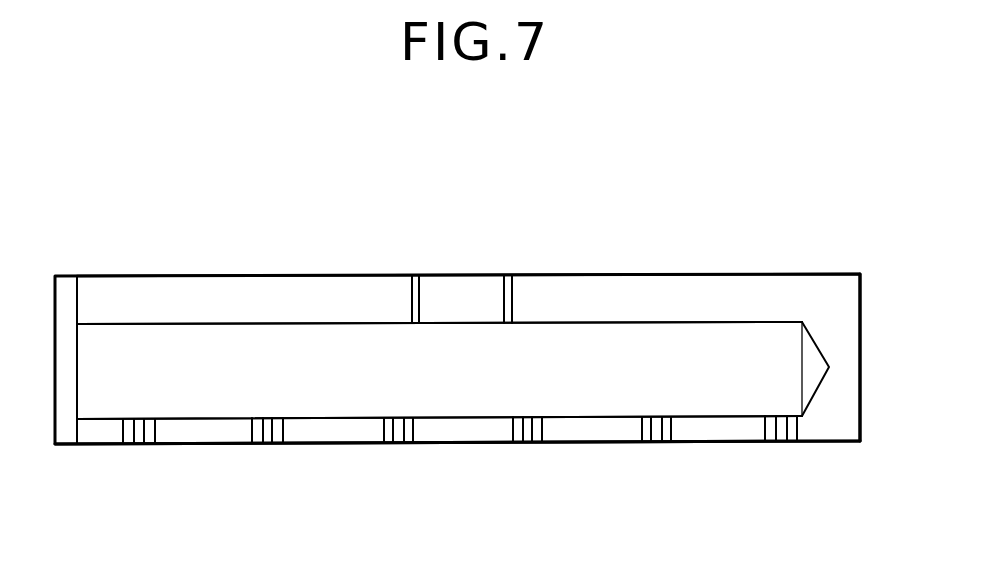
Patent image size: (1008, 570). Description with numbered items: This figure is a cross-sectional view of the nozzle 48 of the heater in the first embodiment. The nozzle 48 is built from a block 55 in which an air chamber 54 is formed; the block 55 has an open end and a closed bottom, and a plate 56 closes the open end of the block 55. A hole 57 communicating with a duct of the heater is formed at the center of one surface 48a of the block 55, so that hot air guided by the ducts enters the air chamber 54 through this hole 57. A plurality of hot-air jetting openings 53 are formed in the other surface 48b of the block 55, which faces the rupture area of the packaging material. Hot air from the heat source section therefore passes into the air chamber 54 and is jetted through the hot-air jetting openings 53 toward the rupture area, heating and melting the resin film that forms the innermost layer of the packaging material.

The nozzle 48 is at (755, 262).
The one surface of the block 48a is at (303, 278).
The other surface of the block 48b is at (730, 442).
The hot-air jetting openings 53 is at (125, 447).
The air chamber 54 is at (632, 345).
The block 55 is at (835, 328).
The plate 56 is at (66, 287).
The hole 57 is at (472, 288).